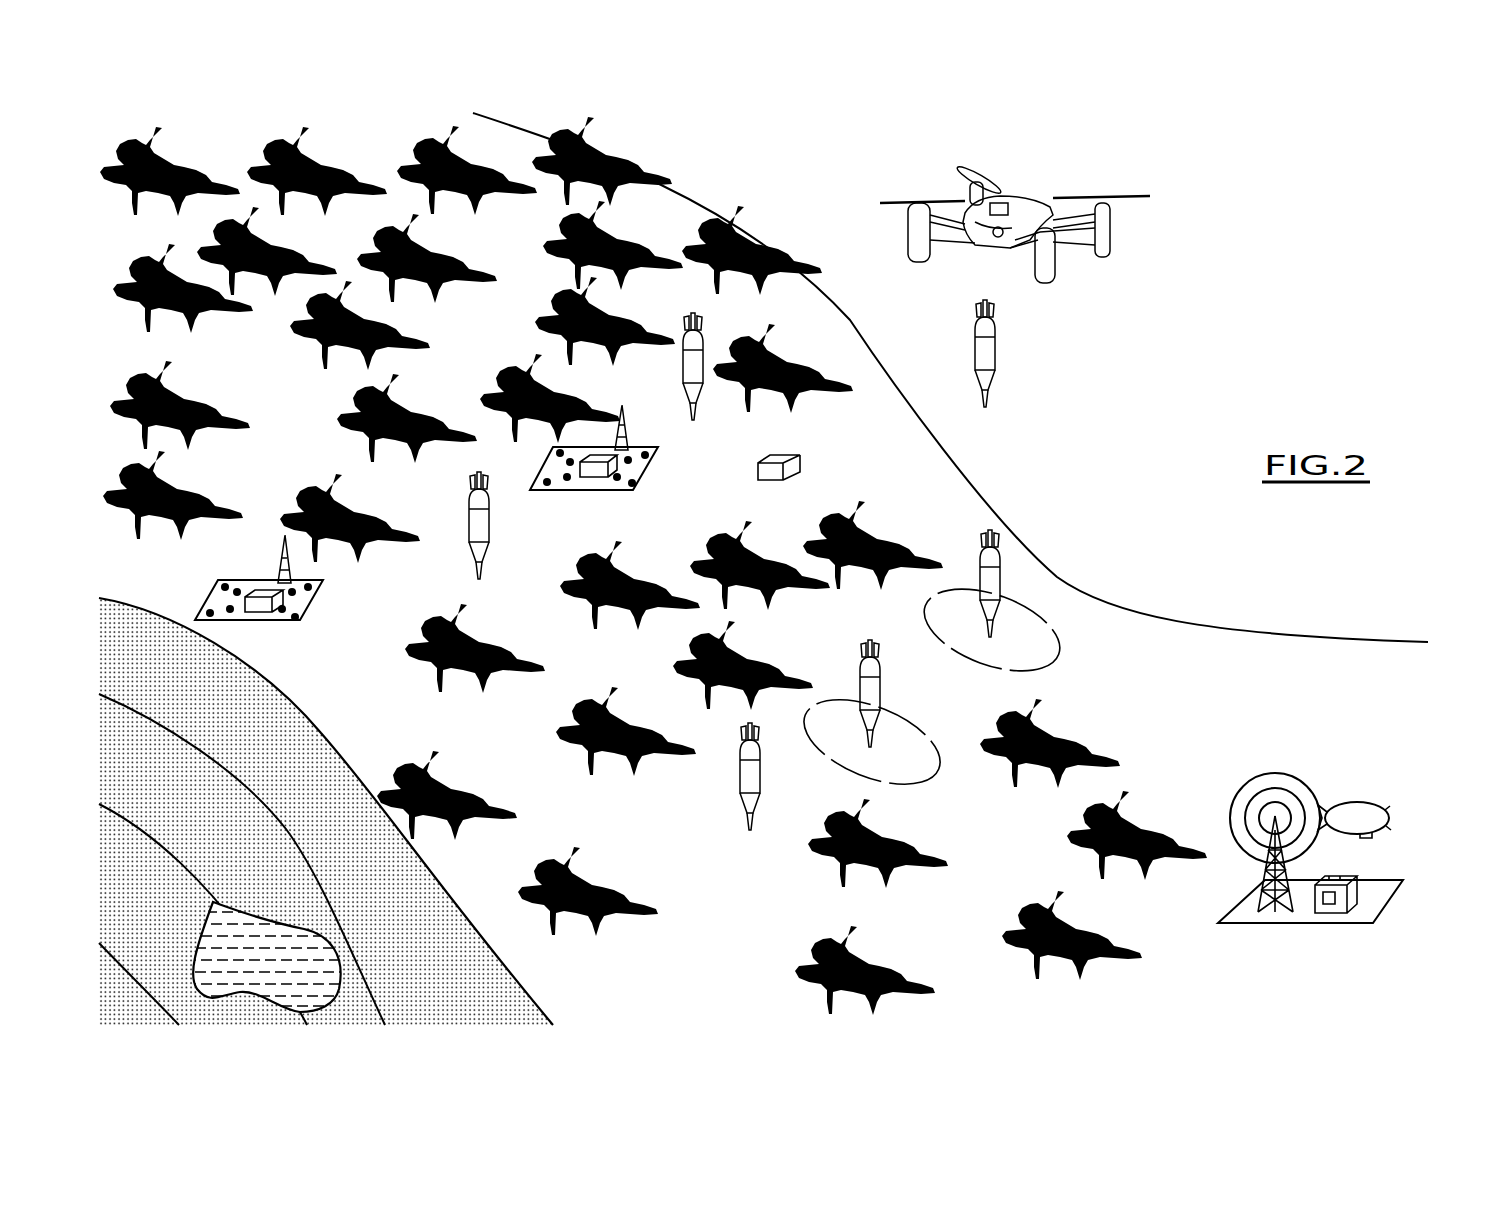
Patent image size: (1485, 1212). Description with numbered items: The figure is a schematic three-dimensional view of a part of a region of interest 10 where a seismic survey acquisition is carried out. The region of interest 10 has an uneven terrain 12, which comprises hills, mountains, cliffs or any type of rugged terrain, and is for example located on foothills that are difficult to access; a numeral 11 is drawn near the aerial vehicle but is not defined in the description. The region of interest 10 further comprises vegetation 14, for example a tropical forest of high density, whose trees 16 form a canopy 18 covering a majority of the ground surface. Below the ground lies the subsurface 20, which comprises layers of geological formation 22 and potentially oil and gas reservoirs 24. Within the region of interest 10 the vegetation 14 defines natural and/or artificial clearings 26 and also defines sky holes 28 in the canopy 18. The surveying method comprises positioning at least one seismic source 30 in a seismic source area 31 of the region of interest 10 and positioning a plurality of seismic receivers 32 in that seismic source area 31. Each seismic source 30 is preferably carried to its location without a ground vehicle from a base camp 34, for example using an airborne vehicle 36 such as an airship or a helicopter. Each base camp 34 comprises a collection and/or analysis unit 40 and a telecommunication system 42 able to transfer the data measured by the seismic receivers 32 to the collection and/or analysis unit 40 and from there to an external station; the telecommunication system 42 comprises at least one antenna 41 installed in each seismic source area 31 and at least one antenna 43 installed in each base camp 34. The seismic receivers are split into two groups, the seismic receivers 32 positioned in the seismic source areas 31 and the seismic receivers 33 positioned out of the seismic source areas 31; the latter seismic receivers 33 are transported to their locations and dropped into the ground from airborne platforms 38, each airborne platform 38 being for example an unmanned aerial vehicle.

The region of interest 10 is at (1277, 688).
The unmanned aerial vehicle 11 is at (1086, 204).
The uneven terrain 12 is at (807, 290).
The vegetation 14 is at (656, 146).
The trees 16 is at (327, 160).
The canopy 18 is at (477, 342).
The subsurface 20 is at (326, 788).
The layers of geological formation 22 is at (145, 765).
The oil and gas reservoirs 24 is at (280, 971).
The clearings 26 is at (415, 549).
The sky holes 28 is at (1050, 636).
The seismic source 30 is at (800, 463).
The seismic source area 31 is at (215, 598).
The seismic receivers 32 is at (230, 585).
The seismic receivers 33 is at (988, 352).
The base camp 34 is at (1272, 926).
The airborne vehicle 36 is at (1385, 815).
The airborne platform 38 is at (1025, 172).
The collection and/or analysis unit 40 is at (1328, 903).
The antenna 41 is at (625, 430).
The telecommunication system 42 is at (1327, 832).
The antenna 43 is at (1262, 887).